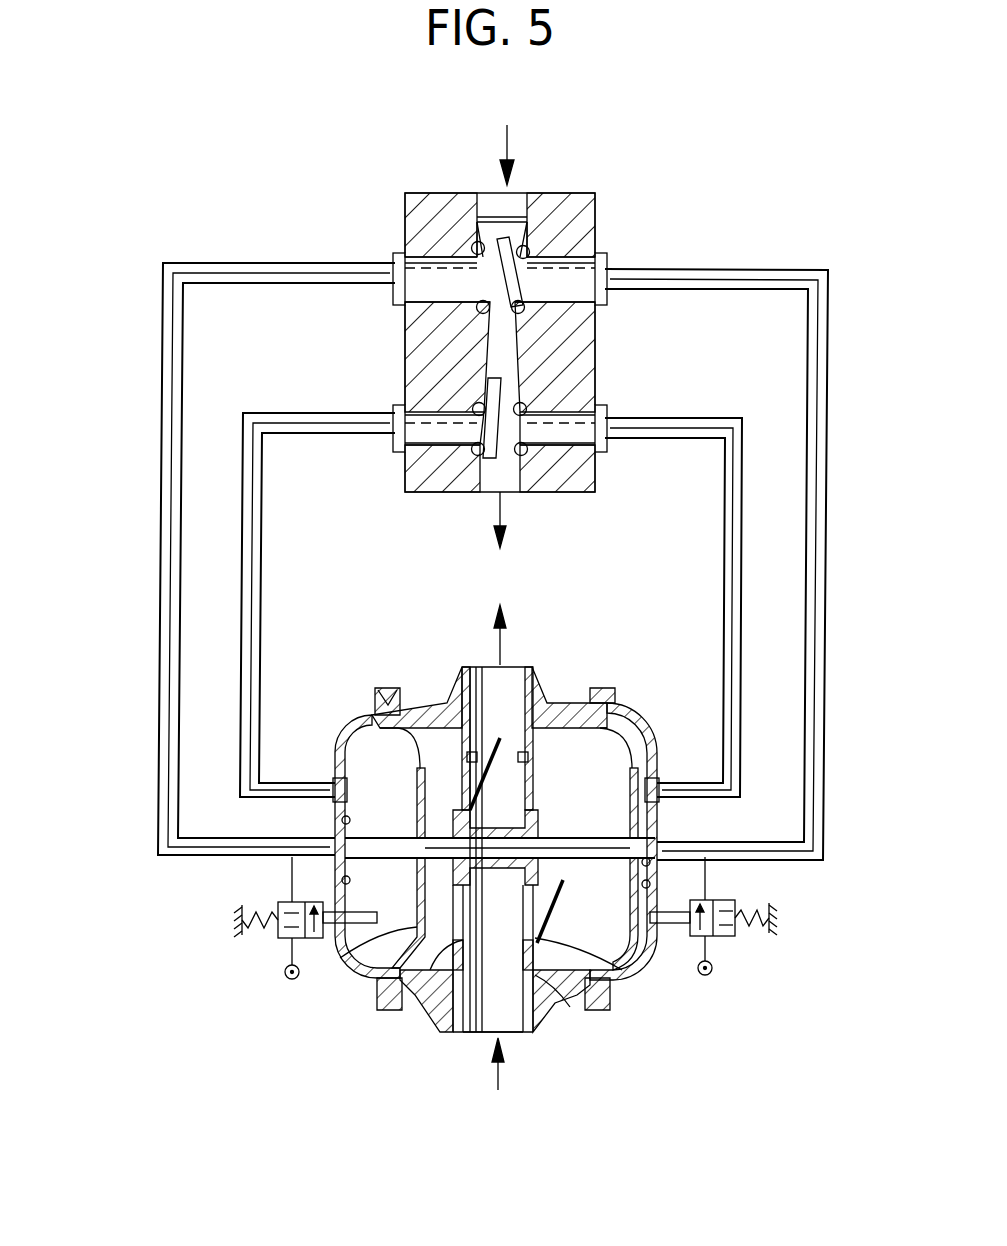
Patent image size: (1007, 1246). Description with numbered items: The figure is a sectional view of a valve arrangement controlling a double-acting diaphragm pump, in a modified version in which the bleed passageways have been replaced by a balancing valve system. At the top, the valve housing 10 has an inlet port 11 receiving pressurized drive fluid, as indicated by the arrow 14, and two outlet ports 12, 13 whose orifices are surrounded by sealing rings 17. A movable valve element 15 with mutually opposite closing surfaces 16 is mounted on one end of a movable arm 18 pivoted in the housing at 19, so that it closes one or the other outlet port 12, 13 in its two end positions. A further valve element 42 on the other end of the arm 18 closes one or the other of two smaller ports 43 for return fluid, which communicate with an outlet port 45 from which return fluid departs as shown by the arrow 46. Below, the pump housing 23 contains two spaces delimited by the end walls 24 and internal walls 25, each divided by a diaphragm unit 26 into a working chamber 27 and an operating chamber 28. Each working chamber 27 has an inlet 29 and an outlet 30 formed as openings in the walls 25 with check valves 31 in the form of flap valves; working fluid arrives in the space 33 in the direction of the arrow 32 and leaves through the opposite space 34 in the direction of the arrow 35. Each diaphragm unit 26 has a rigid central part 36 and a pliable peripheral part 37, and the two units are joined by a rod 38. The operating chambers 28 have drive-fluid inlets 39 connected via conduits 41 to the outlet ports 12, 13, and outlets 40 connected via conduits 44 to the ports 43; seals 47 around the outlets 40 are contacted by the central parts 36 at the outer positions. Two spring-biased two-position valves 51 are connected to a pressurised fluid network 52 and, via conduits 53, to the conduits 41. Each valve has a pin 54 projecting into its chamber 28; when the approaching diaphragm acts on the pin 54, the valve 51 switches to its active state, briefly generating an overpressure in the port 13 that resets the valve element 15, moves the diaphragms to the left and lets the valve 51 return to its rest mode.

The valve housing 10 is at (503, 336).
The inlet port 11 is at (510, 198).
The outlet port 12 is at (433, 270).
The outlet port 13 is at (567, 257).
The arrow 14 is at (507, 125).
The valve element 15 is at (503, 236).
The closing surfaces 16 is at (613, 238).
The sealing rings 17 is at (476, 243).
The movable arm 18 is at (497, 353).
The pivot mounting 19 is at (497, 342).
The pump housing 23 is at (497, 853).
The end walls 24 is at (340, 738).
The internal walls 25 is at (448, 988).
The diaphragm unit 26 is at (415, 788).
The working chamber 27 is at (430, 715).
The operating chamber 28 is at (370, 730).
The inlet 29 is at (522, 925).
The outlet 30 is at (475, 770).
The check valves 31 is at (528, 758).
The arrow 32 is at (505, 1078).
The space 33 is at (485, 1040).
The space 34 is at (510, 672).
The arrow 35 is at (512, 615).
The central part 36 is at (650, 772).
The peripheral part 37 is at (648, 735).
The rod 38 is at (420, 842).
The drive-fluid inlets 39 is at (347, 850).
The drive-fluid outlets 40 is at (340, 762).
The conduits 41 is at (160, 530).
The valve element 42 is at (545, 395).
The ports 43 is at (440, 420).
The conduits 44 is at (242, 530).
The outlet port 45 is at (496, 490).
The arrow 46 is at (508, 527).
The seals 47 is at (350, 880).
The valves 51 is at (280, 938).
The pressurised fluid network 52 is at (285, 978).
The conduits 53 is at (500, 934).
The pin 54 is at (328, 910).